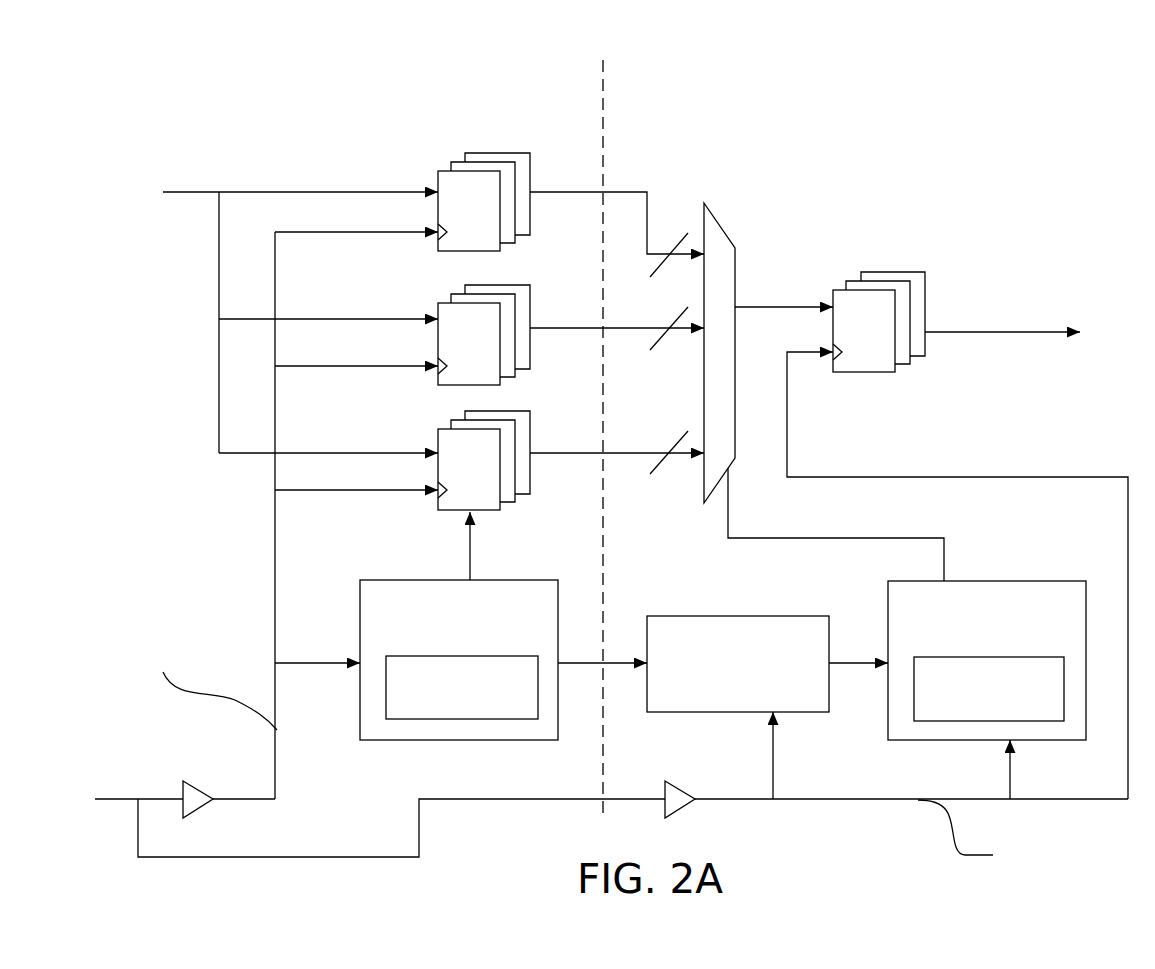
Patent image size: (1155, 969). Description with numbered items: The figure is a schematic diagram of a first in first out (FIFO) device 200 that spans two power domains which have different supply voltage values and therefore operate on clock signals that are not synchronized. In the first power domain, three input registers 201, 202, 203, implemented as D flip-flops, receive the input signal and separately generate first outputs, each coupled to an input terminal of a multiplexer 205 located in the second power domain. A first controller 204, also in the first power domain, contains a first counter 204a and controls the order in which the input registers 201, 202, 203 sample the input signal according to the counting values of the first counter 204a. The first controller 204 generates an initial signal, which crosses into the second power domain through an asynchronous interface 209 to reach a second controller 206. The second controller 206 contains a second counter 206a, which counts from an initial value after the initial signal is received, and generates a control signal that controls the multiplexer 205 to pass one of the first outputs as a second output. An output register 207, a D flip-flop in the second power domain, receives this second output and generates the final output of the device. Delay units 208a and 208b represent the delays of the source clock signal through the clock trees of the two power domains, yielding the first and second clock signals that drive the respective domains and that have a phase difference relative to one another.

The FIFO device 200 is at (99, 70).
The input register 201 is at (438, 171).
The input register 202 is at (438, 304).
The input register 203 is at (438, 430).
The first controller 204 is at (360, 580).
The first counter 204a is at (462, 719).
The multiplexer 205 is at (736, 247).
The second controller 206 is at (1063, 581).
The second counter 206a is at (985, 721).
The output register 207 is at (927, 272).
The delay unit 208a is at (200, 790).
The delay unit 208b is at (680, 790).
The asynchronous interface 209 is at (773, 616).